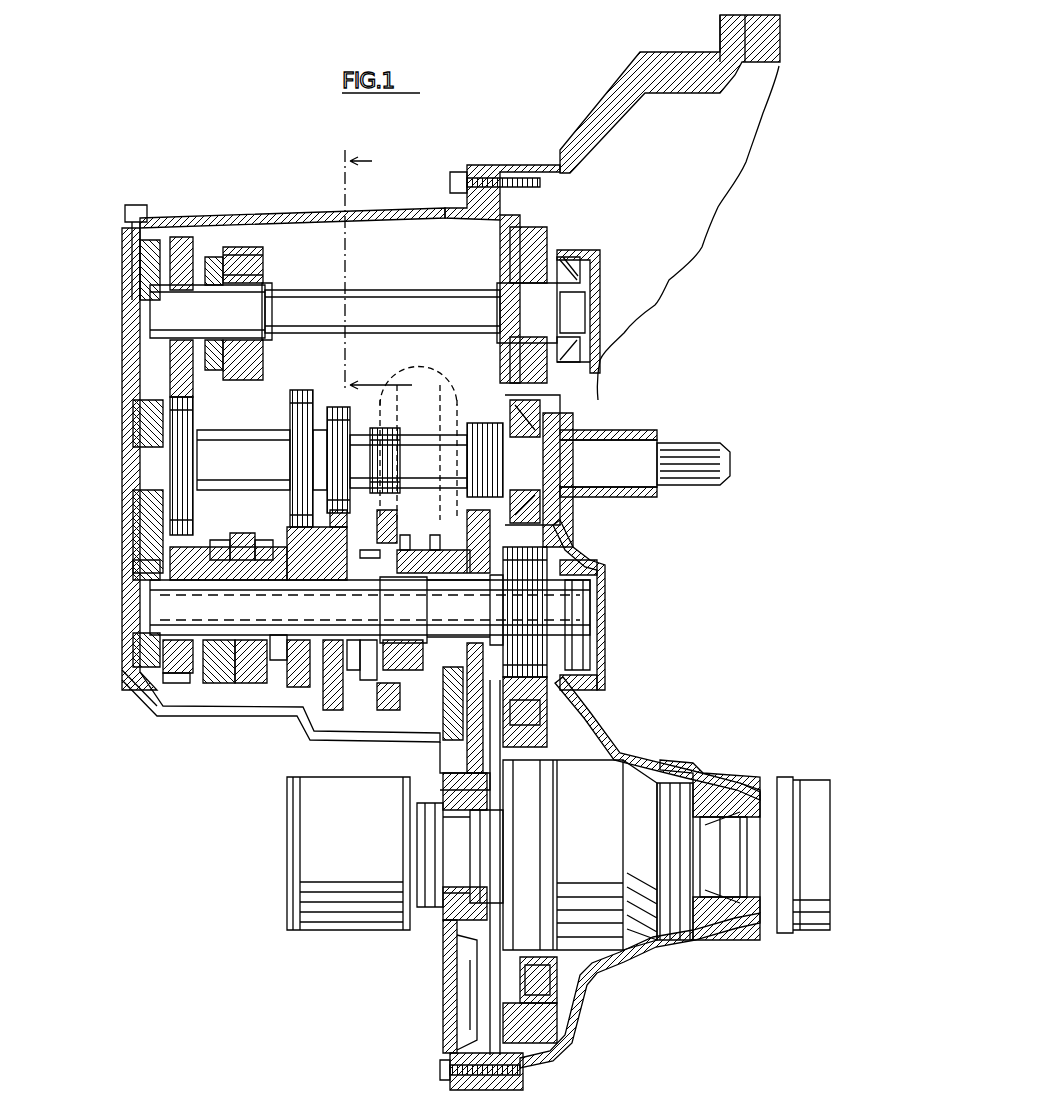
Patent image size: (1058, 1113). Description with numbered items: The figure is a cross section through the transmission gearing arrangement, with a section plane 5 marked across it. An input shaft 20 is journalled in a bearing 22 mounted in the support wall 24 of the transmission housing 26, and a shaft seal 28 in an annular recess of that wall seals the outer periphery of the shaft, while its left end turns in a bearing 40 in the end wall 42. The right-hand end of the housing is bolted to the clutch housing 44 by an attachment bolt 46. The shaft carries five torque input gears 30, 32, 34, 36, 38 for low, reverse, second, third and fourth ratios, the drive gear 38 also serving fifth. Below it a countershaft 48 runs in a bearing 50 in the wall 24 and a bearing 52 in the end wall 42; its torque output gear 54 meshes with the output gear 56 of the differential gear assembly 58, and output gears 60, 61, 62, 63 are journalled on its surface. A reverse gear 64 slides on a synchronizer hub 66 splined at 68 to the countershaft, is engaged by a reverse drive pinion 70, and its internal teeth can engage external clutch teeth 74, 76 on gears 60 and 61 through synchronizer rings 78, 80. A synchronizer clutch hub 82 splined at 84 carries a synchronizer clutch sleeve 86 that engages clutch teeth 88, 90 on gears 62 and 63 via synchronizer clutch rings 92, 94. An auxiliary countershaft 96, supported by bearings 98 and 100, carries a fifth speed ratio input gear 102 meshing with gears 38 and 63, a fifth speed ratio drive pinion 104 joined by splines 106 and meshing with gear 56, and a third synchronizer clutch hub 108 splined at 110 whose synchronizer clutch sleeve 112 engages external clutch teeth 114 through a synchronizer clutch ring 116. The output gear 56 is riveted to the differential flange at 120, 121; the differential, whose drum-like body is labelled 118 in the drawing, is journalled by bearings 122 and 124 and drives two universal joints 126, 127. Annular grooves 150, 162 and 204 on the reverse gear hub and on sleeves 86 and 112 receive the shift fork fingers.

The section plane 5 is at (391, 273).
The input shaft 20 is at (693, 447).
The bearing 22 is at (547, 516).
The support wall 24 is at (553, 533).
The transmission housing 26 is at (368, 222).
The shaft seal 28 is at (553, 428).
The torque input gear 30 is at (480, 432).
The torque input gear 32 is at (400, 492).
The torque input gear 34 is at (352, 415).
The torque input gear 36 is at (294, 410).
The drive gear 38 is at (188, 409).
The bearing 40 is at (157, 426).
The end wall 42 is at (143, 315).
The clutch housing 44 is at (622, 127).
The attachment bolt 46 is at (449, 186).
The countershaft 48 is at (133, 687).
The bearing 50 is at (595, 568).
The bearing 52 is at (148, 630).
The torque output gear 54 is at (515, 558).
The output gear 56 is at (563, 700).
The differential gear assembly 58 is at (418, 958).
The output gear 60 is at (487, 730).
The output gear 61 is at (333, 712).
The output gear 62 is at (300, 694).
The output gear 63 is at (180, 680).
The reverse gear 64 is at (386, 531).
The synchronizer hub 66 is at (400, 706).
The splines 68 is at (441, 610).
The reverse drive pinion 70 is at (432, 380).
The external clutch teeth 74 is at (470, 740).
The external clutch teeth 76 is at (362, 672).
The synchronizer ring 78 is at (433, 672).
The synchronizer ring 80 is at (368, 680).
The synchronizer clutch hub 82 is at (240, 684).
The splines 84 is at (370, 607).
The synchronizer clutch sleeve 86 is at (227, 684).
The external clutch teeth 88 is at (300, 688).
The external clutch teeth 90 is at (200, 560).
The synchronizer clutch ring 92 is at (273, 557).
The synchronizer clutch ring 94 is at (213, 553).
The auxiliary countershaft 96 is at (388, 300).
The bearing 98 is at (580, 272).
The bearing 100 is at (138, 262).
The fifth speed ratio input gear 102 is at (158, 265).
The fifth speed ratio drive pinion 104 is at (540, 247).
The splines 106 is at (518, 269).
The third synchronizer clutch hub 108 is at (271, 349).
The splines 110 is at (287, 293).
The synchronizer clutch sleeve 112 is at (248, 258).
The external clutch teeth 114 is at (180, 243).
The synchronizer clutch ring 116 is at (220, 365).
The drum 118 is at (607, 854).
The rivet 120 is at (553, 733).
The rivet 121 is at (557, 983).
The bearing 122 is at (717, 790).
The bearing 124 is at (440, 772).
The universal joint 126 is at (805, 790).
The universal joint 127 is at (350, 918).
The annular groove 150 is at (430, 543).
The annular groove 162 is at (250, 553).
The annular groove 204 is at (247, 252).